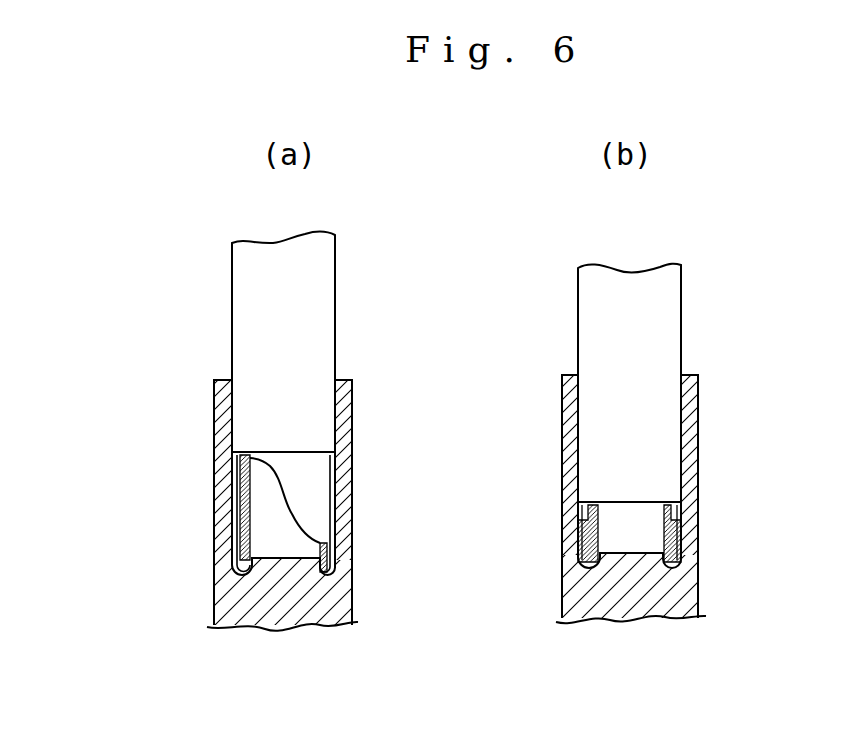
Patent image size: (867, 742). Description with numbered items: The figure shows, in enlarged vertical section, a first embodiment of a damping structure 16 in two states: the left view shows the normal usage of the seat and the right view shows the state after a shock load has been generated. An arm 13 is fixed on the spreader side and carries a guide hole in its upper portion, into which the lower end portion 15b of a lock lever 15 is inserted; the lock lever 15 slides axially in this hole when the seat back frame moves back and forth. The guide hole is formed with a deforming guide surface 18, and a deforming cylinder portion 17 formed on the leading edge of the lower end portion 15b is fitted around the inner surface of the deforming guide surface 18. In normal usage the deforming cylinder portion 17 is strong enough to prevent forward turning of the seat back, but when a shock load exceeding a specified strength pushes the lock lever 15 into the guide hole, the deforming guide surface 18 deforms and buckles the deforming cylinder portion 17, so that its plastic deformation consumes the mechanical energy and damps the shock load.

The arm 13 is at (340, 594).
The lock lever 15 is at (320, 265).
The lower end portion of the lock lever 15b is at (305, 400).
The damping structure 16 is at (437, 513).
The deforming cylinder portion 17 is at (260, 501).
The deforming guide surface 18 is at (237, 522).